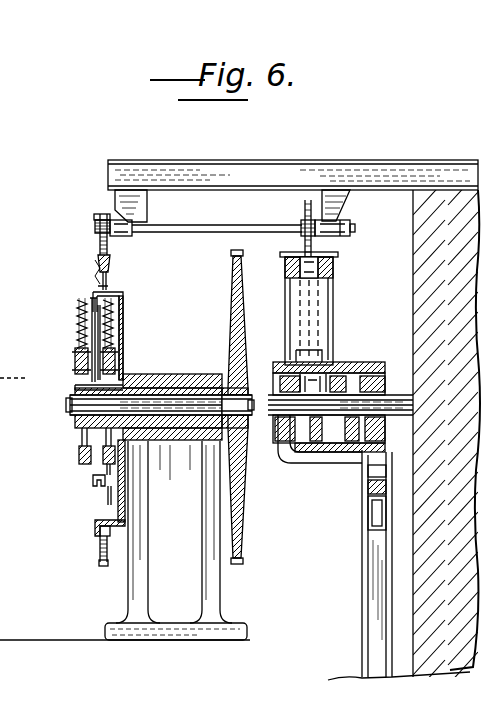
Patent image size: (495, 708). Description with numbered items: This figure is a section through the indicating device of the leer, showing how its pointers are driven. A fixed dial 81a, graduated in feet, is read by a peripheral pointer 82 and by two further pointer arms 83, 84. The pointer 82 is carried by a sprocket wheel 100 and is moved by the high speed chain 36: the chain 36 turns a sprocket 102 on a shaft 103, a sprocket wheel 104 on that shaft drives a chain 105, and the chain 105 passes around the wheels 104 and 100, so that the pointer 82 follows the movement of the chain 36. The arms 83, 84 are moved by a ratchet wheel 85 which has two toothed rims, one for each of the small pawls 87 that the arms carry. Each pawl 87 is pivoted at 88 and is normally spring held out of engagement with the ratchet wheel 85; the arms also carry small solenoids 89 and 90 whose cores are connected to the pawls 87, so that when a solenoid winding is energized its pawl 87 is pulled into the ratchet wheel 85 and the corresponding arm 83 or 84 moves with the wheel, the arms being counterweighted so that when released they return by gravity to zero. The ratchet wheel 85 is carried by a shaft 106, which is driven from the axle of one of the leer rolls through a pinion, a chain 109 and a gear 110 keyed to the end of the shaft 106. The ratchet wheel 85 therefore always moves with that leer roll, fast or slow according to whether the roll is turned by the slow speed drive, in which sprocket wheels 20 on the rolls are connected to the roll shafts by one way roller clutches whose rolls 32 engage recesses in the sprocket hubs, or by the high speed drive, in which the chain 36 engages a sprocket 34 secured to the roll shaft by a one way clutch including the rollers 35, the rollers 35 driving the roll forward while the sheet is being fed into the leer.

The sprocket wheel 20 is at (347, 392).
The rolls 32 is at (343, 400).
The sprocket 34 is at (305, 385).
The rollers 35 is at (300, 432).
The chain 36 is at (330, 271).
The fixed dial 81a is at (95, 528).
The peripheral pointer 82 is at (95, 266).
The pointer 83 is at (80, 440).
The pointer 84 is at (106, 498).
The ratchet wheel 85 is at (92, 482).
The pawl 87 is at (93, 300).
The pivot 88 is at (79, 322).
The solenoid 89 is at (76, 362).
The solenoid 90 is at (122, 358).
The sprocket wheel 100 is at (112, 262).
The sprocket 102 is at (305, 208).
The shaft 103 is at (213, 205).
The sprocket wheel 104 is at (100, 221).
The chain 105 is at (99, 567).
The shaft 106 is at (160, 395).
The chain 109 is at (245, 563).
The gear 110 is at (242, 510).